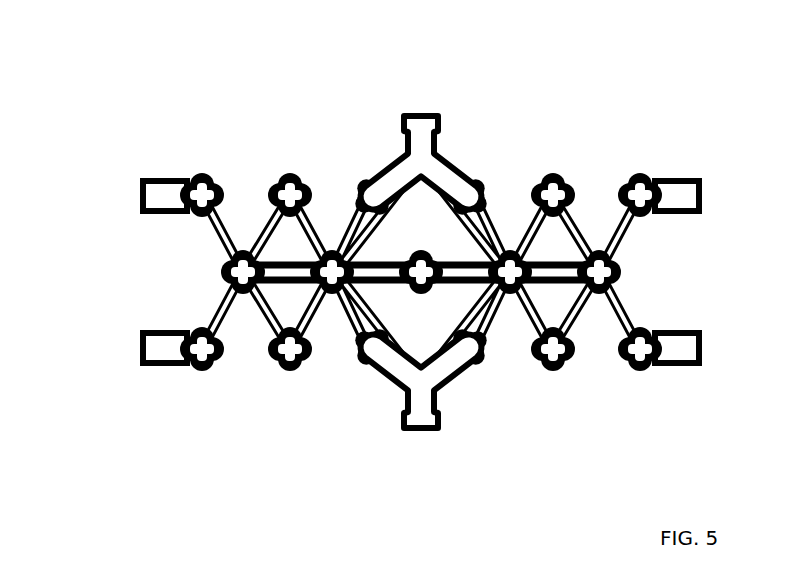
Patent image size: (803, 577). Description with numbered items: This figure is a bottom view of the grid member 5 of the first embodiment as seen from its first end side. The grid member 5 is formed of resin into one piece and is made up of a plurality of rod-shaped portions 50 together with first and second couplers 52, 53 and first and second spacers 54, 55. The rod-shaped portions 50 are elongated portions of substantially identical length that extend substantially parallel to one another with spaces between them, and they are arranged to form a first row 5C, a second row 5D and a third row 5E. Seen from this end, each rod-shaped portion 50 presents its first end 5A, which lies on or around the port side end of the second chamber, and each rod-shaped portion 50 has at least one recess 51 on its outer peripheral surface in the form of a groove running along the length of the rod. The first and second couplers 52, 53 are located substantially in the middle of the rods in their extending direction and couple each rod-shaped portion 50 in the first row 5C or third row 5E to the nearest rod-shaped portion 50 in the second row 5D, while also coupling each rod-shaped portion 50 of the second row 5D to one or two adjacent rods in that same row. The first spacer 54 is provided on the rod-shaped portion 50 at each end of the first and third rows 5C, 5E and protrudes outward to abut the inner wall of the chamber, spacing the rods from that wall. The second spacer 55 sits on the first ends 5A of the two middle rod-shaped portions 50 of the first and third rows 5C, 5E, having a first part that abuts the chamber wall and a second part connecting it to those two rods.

The grid member 5 is at (181, 77).
The rod-shaped portion 50 is at (614, 153).
The recess 51 is at (574, 368).
The first coupler 52 is at (478, 246).
The second coupler 53 is at (307, 218).
The first spacer 54 is at (140, 196).
The second spacer 55 is at (427, 144).
The first end 5A is at (529, 394).
The first row 5C is at (216, 153).
The second row 5D is at (170, 296).
The third row 5E is at (221, 391).